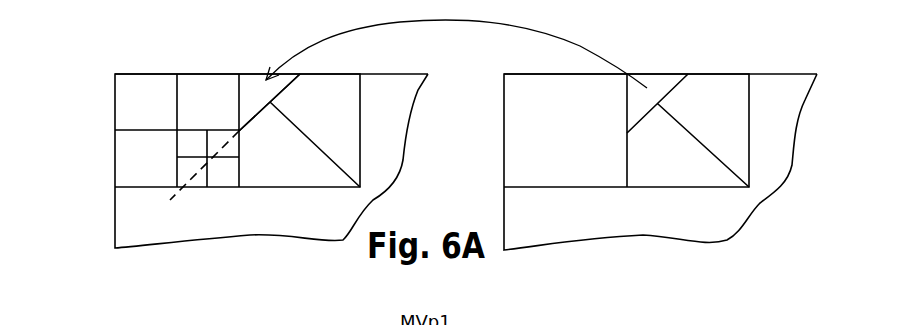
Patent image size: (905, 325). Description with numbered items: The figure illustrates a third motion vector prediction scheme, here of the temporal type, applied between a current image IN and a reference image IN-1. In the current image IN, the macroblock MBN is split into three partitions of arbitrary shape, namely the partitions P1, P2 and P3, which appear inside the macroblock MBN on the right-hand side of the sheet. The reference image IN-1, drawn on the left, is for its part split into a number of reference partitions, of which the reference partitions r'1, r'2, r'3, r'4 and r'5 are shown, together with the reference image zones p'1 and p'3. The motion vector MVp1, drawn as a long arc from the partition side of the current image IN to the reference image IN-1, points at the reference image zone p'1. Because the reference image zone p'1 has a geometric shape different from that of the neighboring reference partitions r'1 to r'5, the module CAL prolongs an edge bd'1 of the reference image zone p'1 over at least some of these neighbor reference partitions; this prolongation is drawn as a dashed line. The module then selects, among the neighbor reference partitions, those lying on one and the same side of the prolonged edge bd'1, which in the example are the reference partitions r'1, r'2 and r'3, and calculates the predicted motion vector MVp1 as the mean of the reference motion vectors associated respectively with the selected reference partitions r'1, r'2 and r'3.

The neighbor reference partition r'5 is at (202, 73).
The reference image zone p'1 is at (293, 101).
The edge of the reference image zone bd'1 is at (302, 89).
The motion vector MVp1 is at (458, 22).
The partition P1 is at (673, 78).
The partition P2 is at (717, 100).
The current image IN is at (792, 72).
The neighbor reference partition r'4 is at (128, 158).
The reference partition r'1 is at (243, 178).
The reference partition r'3 is at (199, 219).
The reference partition r'2 is at (235, 218).
The reference image zone p'3 is at (299, 176).
The reference image IN-1 is at (156, 242).
The partition P3 is at (693, 172).
The macroblock MBN is at (731, 192).